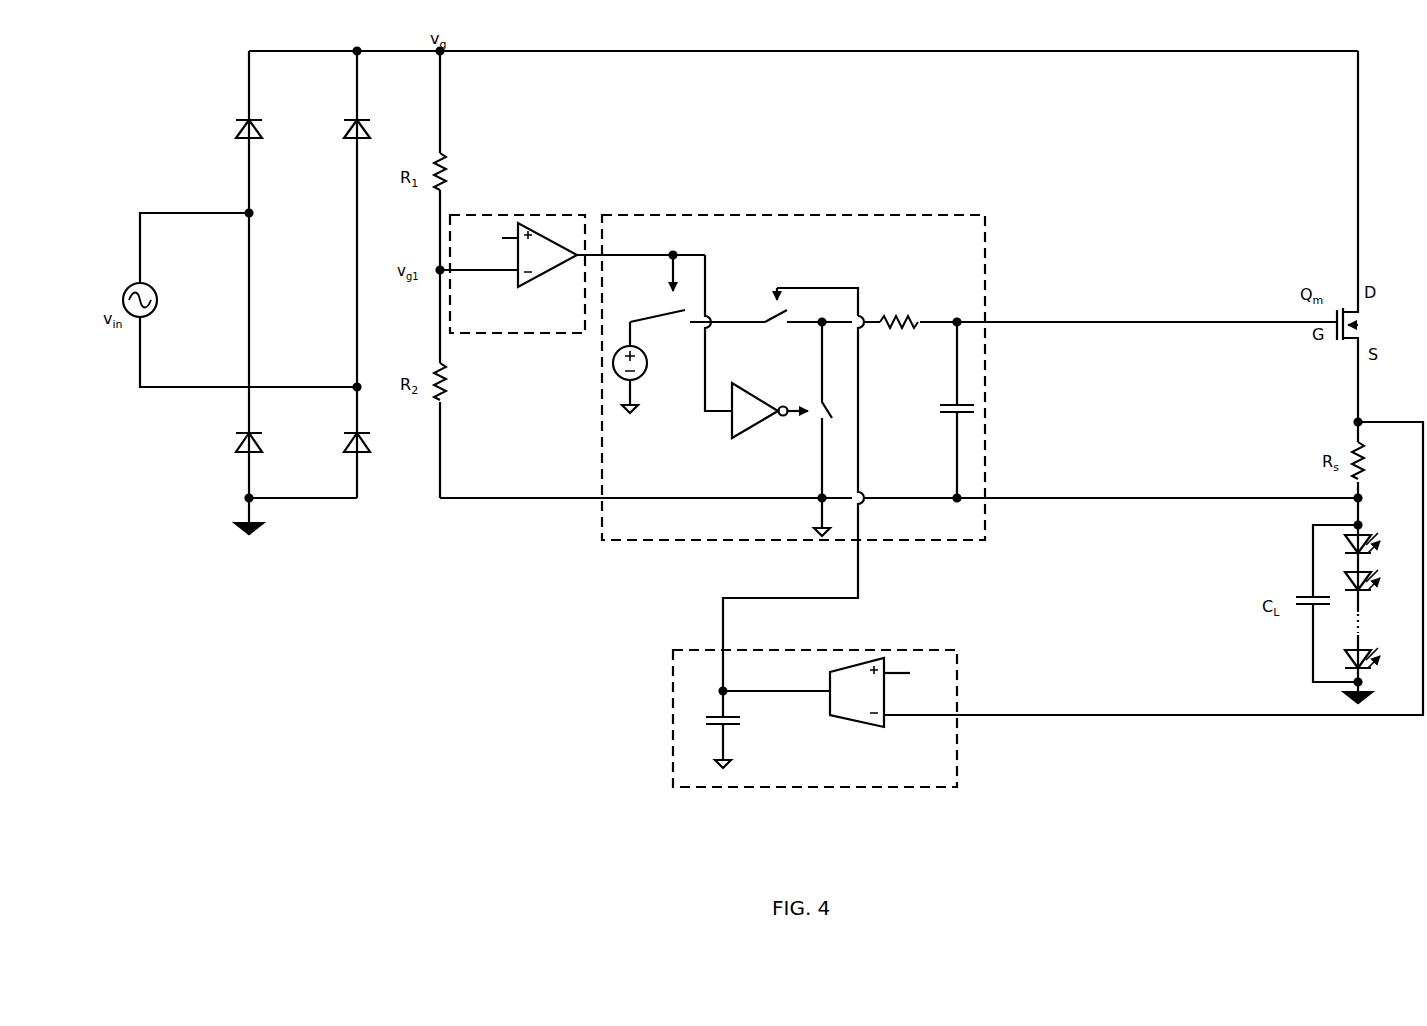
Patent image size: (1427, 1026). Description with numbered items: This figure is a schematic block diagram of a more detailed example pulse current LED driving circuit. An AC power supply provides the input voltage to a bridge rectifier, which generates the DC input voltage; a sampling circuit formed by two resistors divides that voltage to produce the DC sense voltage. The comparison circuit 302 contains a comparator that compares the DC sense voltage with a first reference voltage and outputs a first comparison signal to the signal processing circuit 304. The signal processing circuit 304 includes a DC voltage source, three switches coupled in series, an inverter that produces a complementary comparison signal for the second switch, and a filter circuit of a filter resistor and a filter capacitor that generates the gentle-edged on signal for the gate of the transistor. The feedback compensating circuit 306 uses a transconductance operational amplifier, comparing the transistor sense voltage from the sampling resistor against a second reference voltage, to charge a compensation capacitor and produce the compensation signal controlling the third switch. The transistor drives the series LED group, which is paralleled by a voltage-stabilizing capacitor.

The comparison circuit 302 is at (572, 274).
The signal processing circuit 304 is at (969, 453).
The feedback compensating circuit 306 is at (815, 718).